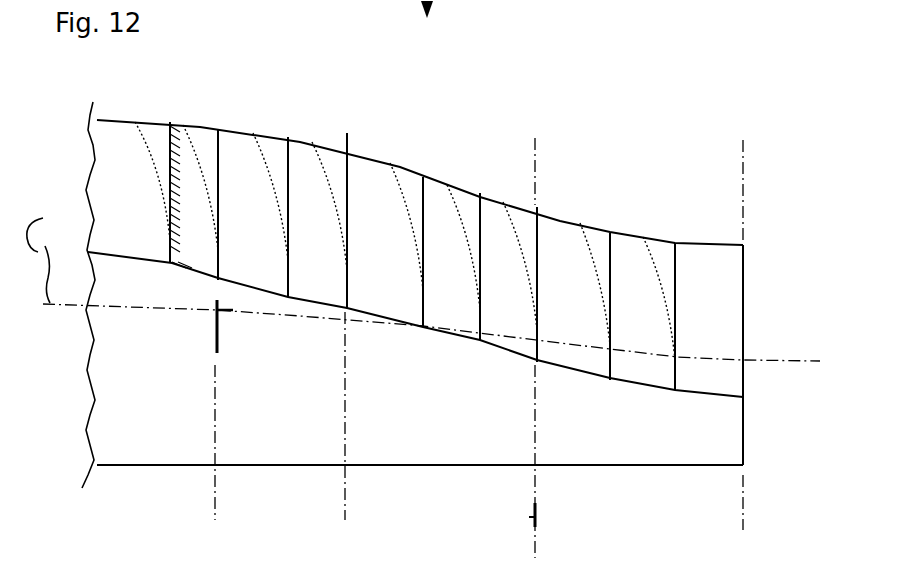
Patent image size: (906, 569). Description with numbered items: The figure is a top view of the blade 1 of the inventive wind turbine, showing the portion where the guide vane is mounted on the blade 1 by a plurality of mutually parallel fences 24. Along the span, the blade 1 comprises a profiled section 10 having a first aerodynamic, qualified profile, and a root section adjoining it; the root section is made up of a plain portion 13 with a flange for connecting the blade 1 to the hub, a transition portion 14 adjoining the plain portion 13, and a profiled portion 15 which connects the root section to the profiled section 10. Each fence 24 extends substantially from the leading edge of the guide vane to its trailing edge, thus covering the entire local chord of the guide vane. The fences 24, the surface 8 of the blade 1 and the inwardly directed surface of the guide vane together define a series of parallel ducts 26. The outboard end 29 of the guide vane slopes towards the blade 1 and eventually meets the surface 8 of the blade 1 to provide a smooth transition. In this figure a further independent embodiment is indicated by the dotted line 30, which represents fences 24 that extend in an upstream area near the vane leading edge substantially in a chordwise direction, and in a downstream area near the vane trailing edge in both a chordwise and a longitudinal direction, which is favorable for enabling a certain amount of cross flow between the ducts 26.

The blade 1 is at (638, 88).
The surface of the blade 8 is at (290, 400).
The profiled section 10 is at (156, 443).
The plain portion 13 is at (639, 342).
The transition portion 14 is at (440, 348).
The profiled portion 15 is at (280, 426).
The fence 24 is at (424, 175).
The duct 26 is at (366, 210).
The outboard end 29 is at (168, 122).
The dotted line 30 is at (282, 136).